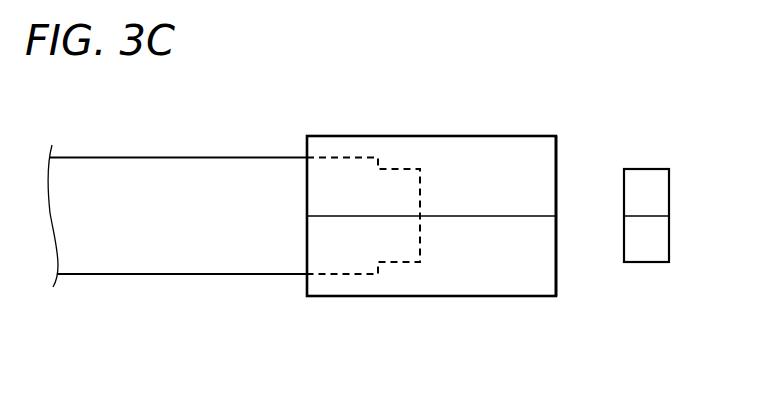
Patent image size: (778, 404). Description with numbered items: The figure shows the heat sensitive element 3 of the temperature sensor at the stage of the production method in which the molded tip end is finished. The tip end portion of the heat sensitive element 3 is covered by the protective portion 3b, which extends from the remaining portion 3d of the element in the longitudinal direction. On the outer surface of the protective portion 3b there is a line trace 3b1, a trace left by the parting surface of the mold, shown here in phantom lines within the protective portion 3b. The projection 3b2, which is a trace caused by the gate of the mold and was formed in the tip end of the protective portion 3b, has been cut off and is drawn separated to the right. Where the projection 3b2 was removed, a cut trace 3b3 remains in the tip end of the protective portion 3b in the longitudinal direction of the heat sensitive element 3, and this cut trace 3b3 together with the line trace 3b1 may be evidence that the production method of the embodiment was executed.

The heat sensitive element 3 is at (365, 212).
The fiber cable / cord portion 3d is at (189, 262).
The protective portion 3b is at (468, 283).
The line trace 3b1 is at (340, 216).
The cut trace 3b3 is at (557, 198).
The projection 3b2 is at (643, 250).